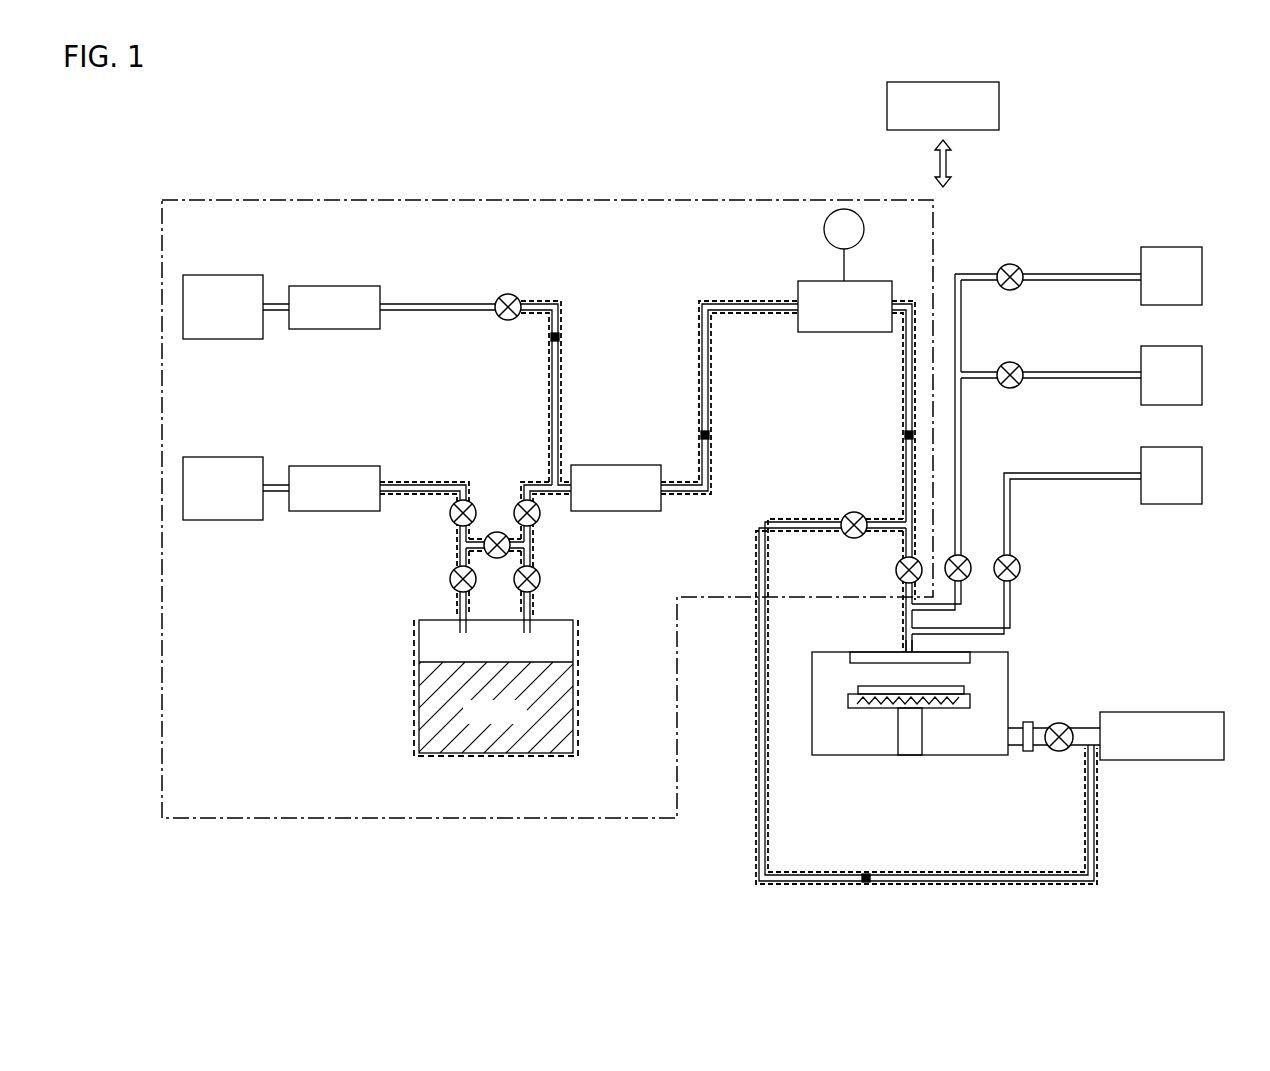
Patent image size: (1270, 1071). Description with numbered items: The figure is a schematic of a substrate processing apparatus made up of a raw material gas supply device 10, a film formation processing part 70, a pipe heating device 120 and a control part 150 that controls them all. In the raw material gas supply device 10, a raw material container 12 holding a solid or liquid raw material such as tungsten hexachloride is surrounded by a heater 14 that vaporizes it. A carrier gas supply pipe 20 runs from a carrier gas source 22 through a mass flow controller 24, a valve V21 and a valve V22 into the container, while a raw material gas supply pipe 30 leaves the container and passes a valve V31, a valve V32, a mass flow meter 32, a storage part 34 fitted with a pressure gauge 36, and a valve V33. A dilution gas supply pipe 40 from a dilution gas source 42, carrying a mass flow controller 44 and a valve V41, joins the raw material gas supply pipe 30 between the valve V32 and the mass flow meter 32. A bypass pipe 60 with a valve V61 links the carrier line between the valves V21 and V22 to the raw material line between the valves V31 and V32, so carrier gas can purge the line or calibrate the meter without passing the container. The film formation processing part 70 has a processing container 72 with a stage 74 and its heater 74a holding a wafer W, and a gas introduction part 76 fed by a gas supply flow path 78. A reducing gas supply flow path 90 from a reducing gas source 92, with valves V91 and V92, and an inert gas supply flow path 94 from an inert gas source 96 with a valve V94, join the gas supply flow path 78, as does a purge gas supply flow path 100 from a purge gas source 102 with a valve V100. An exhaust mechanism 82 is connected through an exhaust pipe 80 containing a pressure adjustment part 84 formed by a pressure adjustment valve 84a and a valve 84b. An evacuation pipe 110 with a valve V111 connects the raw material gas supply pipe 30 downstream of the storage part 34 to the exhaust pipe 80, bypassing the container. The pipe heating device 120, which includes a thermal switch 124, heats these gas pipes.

The raw material gas supply device 10 is at (746, 196).
The raw material container 12 is at (443, 757).
The heater 14 is at (553, 757).
The carrier gas supply pipe 20 is at (413, 484).
The carrier gas source 22 is at (225, 522).
The mass flow controller 24 is at (335, 512).
The raw material gas supply pipe 30 is at (712, 398).
The mass flow meter 32 is at (640, 512).
The storage part 34 is at (843, 333).
The pressure gauge 36 is at (865, 229).
The dilution gas supply pipe 40 is at (437, 300).
The dilution gas source 42 is at (225, 341).
The mass flow controller 44 is at (335, 330).
The bypass pipe 60 is at (510, 545).
The film formation processing part 70 is at (862, 782).
The processing container 72 is at (965, 756).
The stage 74 is at (871, 722).
The heater 74a is at (878, 709).
The gas introduction part 76 is at (852, 652).
The gas supply flow path 78 is at (905, 645).
The exhaust pipe 80 is at (1080, 728).
The exhaust mechanism 82 is at (1162, 712).
The pressure adjustment part 84 is at (1033, 786).
The pressure adjustment valve 84a is at (1028, 753).
The valve 84b is at (1057, 765).
The reducing gas supply flow path 90 is at (962, 428).
The reducing gas source 92 is at (1203, 375).
The inert gas supply flow path 94 is at (1065, 274).
The inert gas source 96 is at (1203, 277).
The purge gas supply flow path 100 is at (1072, 480).
The purge gas source 102 is at (1203, 477).
The evacuation pipe 110 is at (755, 573).
The pipe heating device 120 is at (697, 415).
The thermal switch 124 is at (559, 337).
The control part 150 is at (960, 82).
The wafer W is at (964, 688).
The valve V21 is at (463, 500).
The valve V22 is at (450, 579).
The valve V31 is at (540, 579).
The valve V32 is at (527, 500).
The valve V33 is at (896, 570).
The valve V41 is at (508, 294).
The valve V61 is at (484, 545).
The valve V91 is at (1010, 362).
The valve V92 is at (968, 560).
The valve V94 is at (1010, 264).
The valve V100 is at (1021, 568).
The valve V111 is at (854, 512).